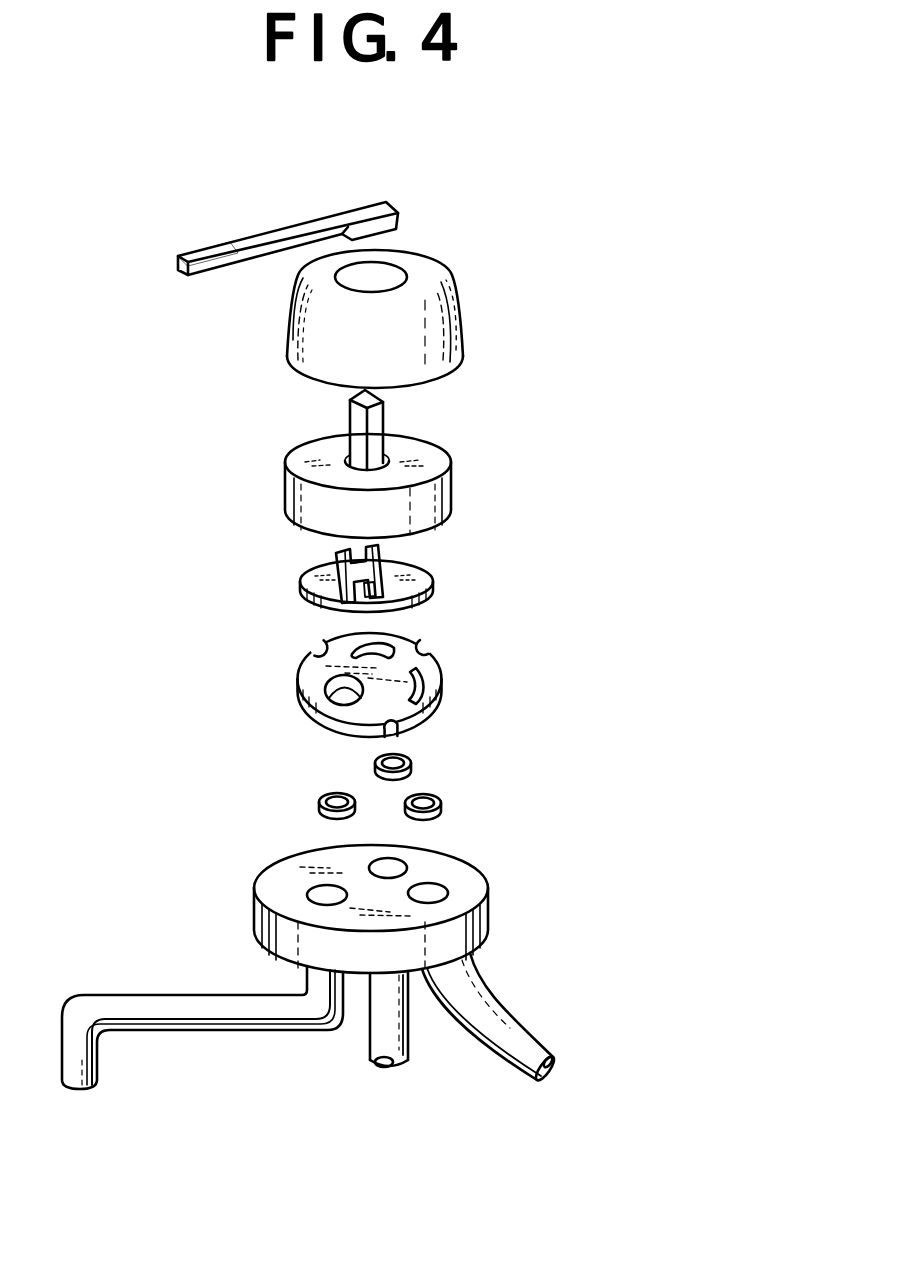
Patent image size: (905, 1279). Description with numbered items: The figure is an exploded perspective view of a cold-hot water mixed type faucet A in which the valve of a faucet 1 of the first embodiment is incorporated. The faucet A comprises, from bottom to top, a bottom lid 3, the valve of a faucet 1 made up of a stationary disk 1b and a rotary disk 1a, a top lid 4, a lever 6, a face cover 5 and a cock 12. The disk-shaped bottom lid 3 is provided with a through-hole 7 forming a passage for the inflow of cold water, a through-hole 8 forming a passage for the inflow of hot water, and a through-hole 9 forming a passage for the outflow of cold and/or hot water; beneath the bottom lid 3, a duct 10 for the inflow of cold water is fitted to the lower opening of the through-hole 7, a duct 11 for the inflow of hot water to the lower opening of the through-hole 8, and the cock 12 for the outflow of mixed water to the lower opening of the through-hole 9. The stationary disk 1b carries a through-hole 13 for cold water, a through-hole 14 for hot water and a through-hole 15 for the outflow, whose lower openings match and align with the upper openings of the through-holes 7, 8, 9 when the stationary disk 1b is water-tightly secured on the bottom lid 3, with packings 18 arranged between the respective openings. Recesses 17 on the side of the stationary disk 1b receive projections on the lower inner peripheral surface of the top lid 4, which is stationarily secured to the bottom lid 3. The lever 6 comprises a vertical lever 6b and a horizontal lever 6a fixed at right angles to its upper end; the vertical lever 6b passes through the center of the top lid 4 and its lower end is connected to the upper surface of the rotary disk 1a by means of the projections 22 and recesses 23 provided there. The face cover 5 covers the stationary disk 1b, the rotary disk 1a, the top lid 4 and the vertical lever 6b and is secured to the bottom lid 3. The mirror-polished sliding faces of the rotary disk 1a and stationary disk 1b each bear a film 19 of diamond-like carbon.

The cold-hot water mixed type faucet A is at (462, 208).
The valve of a faucet 1 is at (496, 599).
The rotary disk 1a is at (427, 563).
The stationary disk 1b is at (442, 692).
The bottom lid 3 is at (488, 917).
The top lid 4 is at (453, 478).
The face cover 5 is at (467, 289).
The lever 6 is at (292, 223).
The horizontal lever 6a is at (255, 232).
The vertical lever 6b is at (384, 413).
The through-hole 7 is at (443, 890).
The through-hole 8 is at (393, 870).
The through-hole 9 is at (320, 892).
The duct 10 is at (523, 1032).
The duct 11 is at (410, 1047).
The cock 12 is at (97, 1065).
The through-hole 13 is at (420, 707).
The through-hole 14 is at (360, 650).
The through-hole 15 is at (343, 698).
The recesses 17 is at (313, 656).
The packings 18 is at (407, 803).
The film 19 is at (318, 680).
The projections 22 is at (337, 567).
The recesses 23 is at (357, 543).